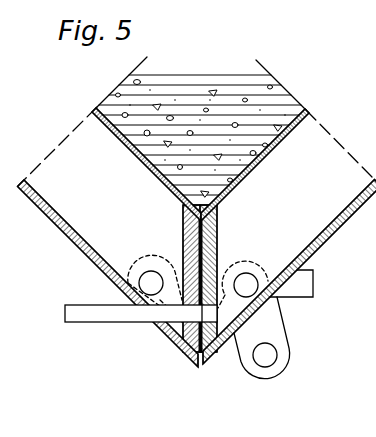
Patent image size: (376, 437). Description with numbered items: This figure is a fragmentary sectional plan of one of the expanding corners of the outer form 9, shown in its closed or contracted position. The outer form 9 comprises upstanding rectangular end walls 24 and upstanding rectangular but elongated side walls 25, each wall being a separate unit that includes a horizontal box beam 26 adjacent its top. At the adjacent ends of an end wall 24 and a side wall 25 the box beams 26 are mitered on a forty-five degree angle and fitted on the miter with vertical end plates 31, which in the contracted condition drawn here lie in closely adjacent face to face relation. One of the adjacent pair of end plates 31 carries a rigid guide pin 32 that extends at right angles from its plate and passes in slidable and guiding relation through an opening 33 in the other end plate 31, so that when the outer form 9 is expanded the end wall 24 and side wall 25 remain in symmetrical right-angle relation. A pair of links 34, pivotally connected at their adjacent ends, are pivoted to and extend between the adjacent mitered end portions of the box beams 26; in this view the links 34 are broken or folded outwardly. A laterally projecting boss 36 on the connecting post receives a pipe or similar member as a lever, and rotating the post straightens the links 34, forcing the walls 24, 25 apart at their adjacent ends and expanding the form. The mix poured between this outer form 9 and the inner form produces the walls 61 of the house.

The outer form 9 is at (323, 248).
The end wall 24 is at (263, 160).
The side wall 25 is at (150, 160).
The horizontal box beam 26 is at (82, 230).
The vertical end plate 31 is at (208, 232).
The rigid guide pin 32 is at (92, 323).
The opening 33 is at (218, 262).
The link 34 is at (257, 335).
The laterally projecting boss 36 is at (302, 288).
The walls of the house 61 is at (167, 110).